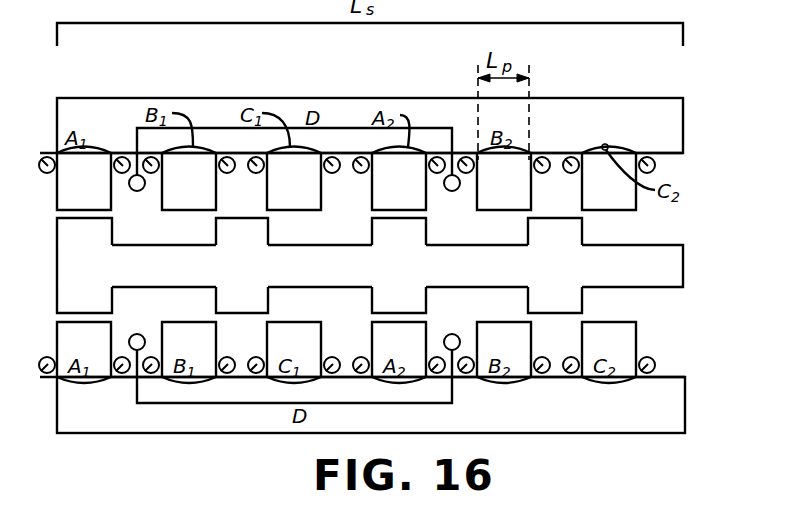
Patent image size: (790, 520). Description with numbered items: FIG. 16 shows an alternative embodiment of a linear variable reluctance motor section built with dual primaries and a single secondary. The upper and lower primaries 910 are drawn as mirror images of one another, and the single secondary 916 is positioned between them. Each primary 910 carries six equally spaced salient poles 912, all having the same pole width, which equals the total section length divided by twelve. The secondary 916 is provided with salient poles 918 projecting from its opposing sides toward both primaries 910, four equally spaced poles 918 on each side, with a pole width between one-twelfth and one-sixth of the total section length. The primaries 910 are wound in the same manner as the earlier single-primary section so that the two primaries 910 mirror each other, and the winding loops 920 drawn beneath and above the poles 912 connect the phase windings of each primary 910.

The primary 910 is at (330, 97).
The salient pole 912 is at (346, 265).
The secondary 916 is at (653, 247).
The salient pole 918 is at (319, 265).
The tap loop / winding connection 920 is at (447, 128).